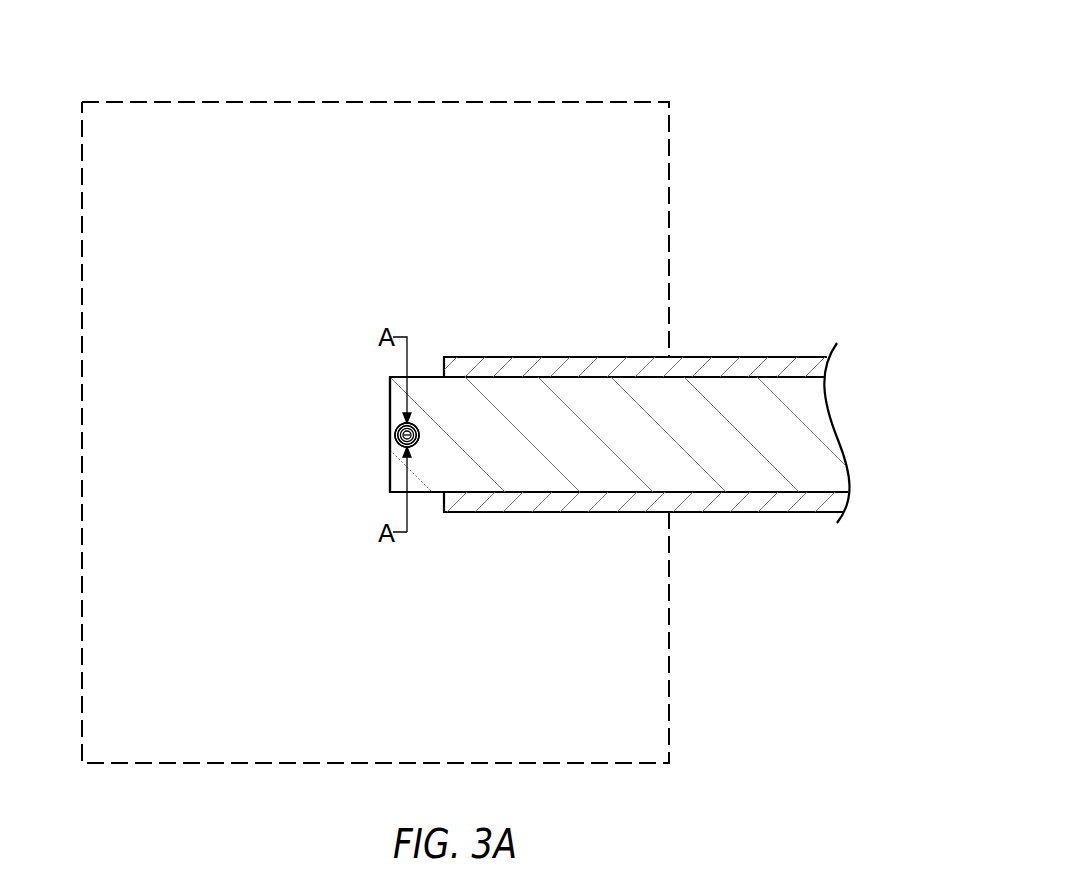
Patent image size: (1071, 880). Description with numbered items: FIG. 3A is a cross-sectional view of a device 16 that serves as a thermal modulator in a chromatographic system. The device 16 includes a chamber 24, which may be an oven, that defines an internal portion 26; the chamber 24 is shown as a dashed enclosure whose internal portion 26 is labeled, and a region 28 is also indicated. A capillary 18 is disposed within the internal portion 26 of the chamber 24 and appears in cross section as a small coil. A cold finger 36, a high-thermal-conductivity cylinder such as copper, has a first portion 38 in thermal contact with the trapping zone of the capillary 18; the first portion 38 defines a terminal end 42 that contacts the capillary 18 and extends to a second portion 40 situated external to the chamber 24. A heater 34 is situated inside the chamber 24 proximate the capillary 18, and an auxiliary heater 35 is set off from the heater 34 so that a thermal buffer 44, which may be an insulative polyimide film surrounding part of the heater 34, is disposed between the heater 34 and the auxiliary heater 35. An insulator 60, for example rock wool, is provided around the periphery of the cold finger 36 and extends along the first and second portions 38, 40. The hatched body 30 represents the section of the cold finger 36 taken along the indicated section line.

The device 16 is at (731, 59).
The capillary 18 is at (400, 440).
The chamber 24 is at (112, 99).
The internal portion 26 is at (385, 220).
The outer region 28 is at (385, 67).
The substrate body 30 is at (617, 492).
The heater 34 is at (400, 433).
The auxiliary heater 35 is at (402, 425).
The cold finger 36 is at (692, 369).
The first portion 38 is at (572, 376).
The second portion 40 is at (736, 376).
The terminal end 42 is at (390, 476).
The thermal buffer 44 is at (412, 423).
The insulator 60 is at (716, 495).